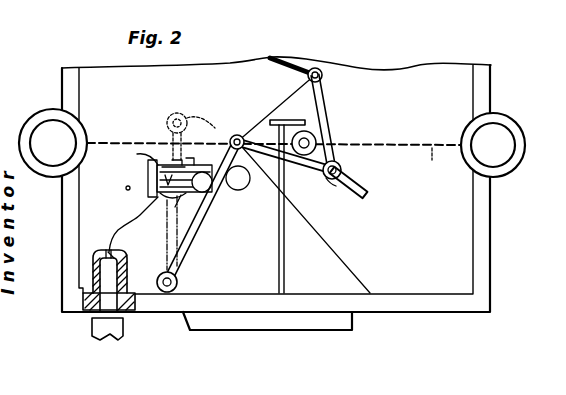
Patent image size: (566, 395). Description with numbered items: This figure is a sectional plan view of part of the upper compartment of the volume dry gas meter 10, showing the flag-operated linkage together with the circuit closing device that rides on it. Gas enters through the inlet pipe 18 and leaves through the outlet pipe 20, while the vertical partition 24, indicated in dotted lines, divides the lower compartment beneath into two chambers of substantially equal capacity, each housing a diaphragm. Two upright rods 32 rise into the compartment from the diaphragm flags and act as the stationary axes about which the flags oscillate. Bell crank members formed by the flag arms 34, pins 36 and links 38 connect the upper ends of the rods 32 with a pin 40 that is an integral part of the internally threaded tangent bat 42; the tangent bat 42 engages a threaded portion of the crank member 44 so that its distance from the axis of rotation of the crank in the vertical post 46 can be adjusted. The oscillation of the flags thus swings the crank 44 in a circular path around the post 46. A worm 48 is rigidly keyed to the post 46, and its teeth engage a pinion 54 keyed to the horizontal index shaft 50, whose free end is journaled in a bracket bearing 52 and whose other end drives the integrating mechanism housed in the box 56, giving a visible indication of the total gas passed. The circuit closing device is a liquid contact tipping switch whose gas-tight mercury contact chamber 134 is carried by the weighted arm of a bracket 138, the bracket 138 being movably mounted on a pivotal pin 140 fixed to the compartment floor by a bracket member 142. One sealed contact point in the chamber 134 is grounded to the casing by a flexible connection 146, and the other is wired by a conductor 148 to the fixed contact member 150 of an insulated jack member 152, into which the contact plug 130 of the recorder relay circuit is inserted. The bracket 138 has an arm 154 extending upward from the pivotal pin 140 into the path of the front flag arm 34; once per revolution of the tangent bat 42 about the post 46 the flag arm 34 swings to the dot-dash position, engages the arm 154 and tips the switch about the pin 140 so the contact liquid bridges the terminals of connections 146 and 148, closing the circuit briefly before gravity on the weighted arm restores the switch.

The meter 10 is at (468, 256).
The inlet pipe 18 is at (76, 127).
The outlet pipe 20 is at (508, 172).
The vertical partition 24 is at (437, 164).
The upright rods 32 is at (178, 282).
The flag arms 34 is at (193, 243).
The pins 36 is at (233, 137).
The links 38 is at (326, 98).
The pin 40 is at (342, 170).
The tangent bat 42 is at (336, 188).
The crank member 44 is at (363, 195).
The post 46 is at (346, 146).
The worm 48 is at (313, 140).
The index shaft 50 is at (285, 280).
The bracket bearing 52 is at (292, 120).
The pinion 54 is at (250, 138).
The box 56 is at (353, 322).
The contact plug 130 is at (123, 328).
The mercury contact chamber 134 is at (247, 193).
The bracket 138 is at (198, 160).
The pivotal pin 140 is at (178, 200).
The bracket member 142 is at (133, 154).
The flexible connection 146 is at (175, 207).
The conductor 148 is at (126, 189).
The fixed contact member 150 is at (112, 243).
The insulated jack member 152 is at (133, 265).
The arm 154 is at (168, 145).